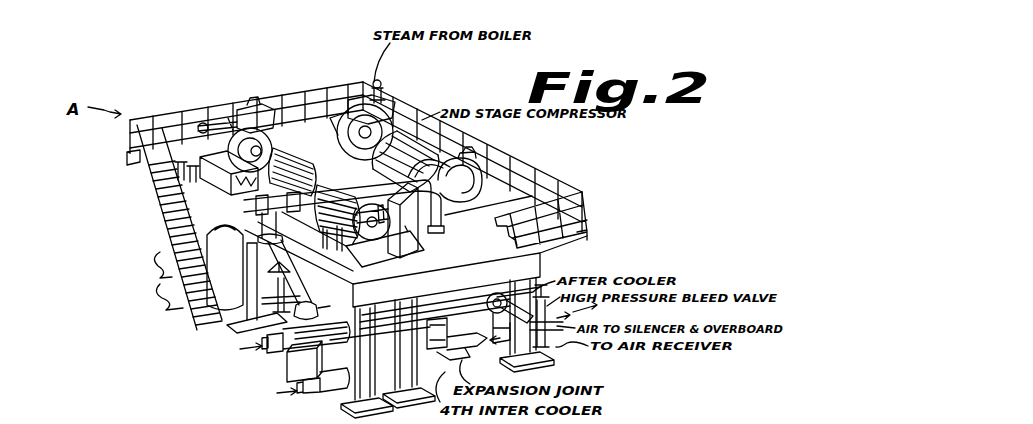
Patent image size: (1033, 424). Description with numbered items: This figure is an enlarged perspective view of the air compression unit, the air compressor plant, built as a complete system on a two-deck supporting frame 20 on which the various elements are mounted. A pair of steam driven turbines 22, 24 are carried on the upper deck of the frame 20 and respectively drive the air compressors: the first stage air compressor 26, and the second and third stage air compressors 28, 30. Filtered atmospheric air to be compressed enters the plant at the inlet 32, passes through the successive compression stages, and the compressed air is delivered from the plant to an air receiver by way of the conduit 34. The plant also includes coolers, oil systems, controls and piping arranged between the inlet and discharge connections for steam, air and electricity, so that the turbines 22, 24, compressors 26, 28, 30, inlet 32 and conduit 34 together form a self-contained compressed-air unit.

The two-deck supporting frame 20 is at (527, 267).
The steam driven turbine 22 is at (373, 98).
The steam driven turbine 24 is at (280, 77).
The first stage air compressor 26 is at (472, 148).
The second stage air compressor 28 is at (630, 112).
The third stage air compressor 30 is at (440, 141).
The filtered atmospheric air inlet 32 is at (623, 186).
The conduit 34 is at (560, 343).